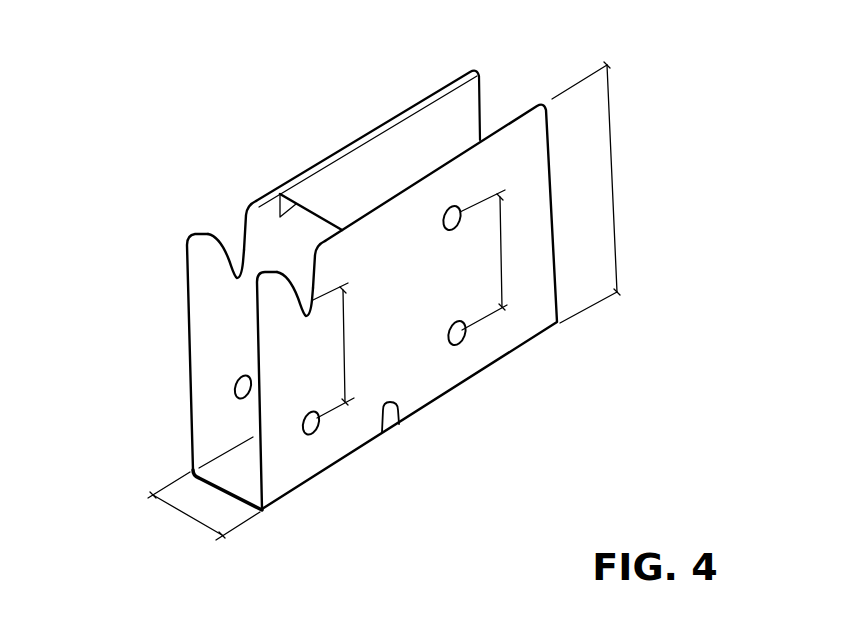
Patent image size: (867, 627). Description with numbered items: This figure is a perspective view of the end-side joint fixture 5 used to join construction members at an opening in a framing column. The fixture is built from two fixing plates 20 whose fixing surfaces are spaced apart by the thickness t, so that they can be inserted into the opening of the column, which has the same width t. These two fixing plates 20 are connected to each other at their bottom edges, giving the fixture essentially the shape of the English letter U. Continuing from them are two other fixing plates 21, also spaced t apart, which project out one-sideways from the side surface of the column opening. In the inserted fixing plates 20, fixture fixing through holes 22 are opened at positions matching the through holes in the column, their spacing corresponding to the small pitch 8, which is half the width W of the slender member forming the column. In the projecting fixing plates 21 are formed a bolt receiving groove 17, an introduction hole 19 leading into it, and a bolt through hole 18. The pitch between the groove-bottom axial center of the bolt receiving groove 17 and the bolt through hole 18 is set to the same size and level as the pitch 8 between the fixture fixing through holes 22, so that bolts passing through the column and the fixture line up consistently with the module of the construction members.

The end-side joint fixture 5 is at (479, 67).
The fixing plate 20 is at (458, 104).
The fixing plate 21 is at (210, 290).
The bolt receiving groove 17 is at (237, 273).
The introduction hole 19 is at (247, 210).
The bolt through hole 18 is at (236, 392).
The fixture fixing through hole 22 is at (447, 232).
The small pitch 8 is at (345, 345).
The width W is at (613, 195).
The thickness t is at (190, 514).